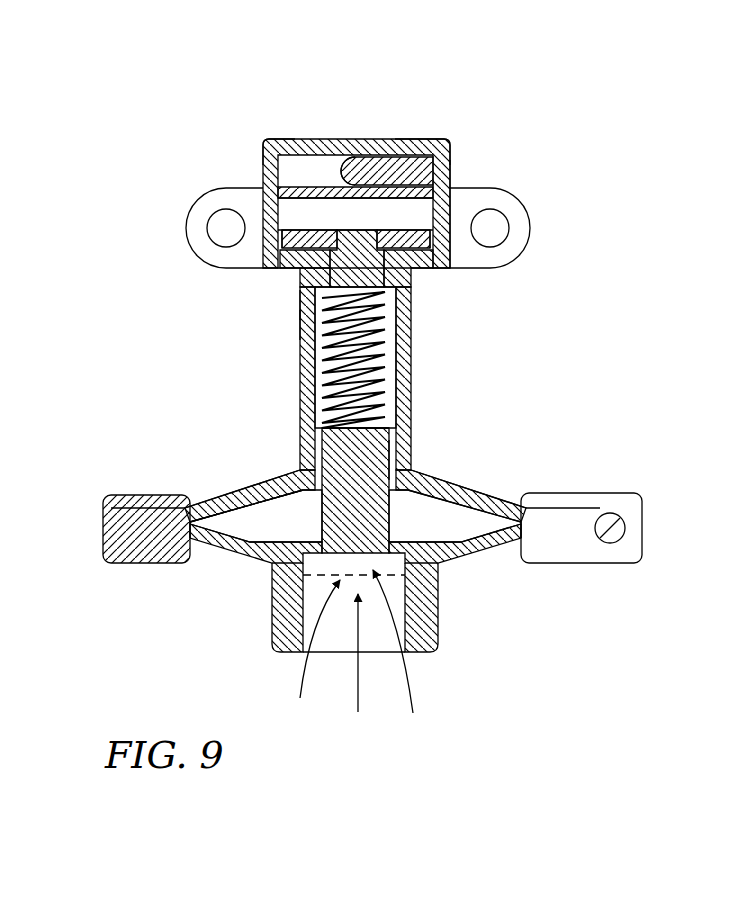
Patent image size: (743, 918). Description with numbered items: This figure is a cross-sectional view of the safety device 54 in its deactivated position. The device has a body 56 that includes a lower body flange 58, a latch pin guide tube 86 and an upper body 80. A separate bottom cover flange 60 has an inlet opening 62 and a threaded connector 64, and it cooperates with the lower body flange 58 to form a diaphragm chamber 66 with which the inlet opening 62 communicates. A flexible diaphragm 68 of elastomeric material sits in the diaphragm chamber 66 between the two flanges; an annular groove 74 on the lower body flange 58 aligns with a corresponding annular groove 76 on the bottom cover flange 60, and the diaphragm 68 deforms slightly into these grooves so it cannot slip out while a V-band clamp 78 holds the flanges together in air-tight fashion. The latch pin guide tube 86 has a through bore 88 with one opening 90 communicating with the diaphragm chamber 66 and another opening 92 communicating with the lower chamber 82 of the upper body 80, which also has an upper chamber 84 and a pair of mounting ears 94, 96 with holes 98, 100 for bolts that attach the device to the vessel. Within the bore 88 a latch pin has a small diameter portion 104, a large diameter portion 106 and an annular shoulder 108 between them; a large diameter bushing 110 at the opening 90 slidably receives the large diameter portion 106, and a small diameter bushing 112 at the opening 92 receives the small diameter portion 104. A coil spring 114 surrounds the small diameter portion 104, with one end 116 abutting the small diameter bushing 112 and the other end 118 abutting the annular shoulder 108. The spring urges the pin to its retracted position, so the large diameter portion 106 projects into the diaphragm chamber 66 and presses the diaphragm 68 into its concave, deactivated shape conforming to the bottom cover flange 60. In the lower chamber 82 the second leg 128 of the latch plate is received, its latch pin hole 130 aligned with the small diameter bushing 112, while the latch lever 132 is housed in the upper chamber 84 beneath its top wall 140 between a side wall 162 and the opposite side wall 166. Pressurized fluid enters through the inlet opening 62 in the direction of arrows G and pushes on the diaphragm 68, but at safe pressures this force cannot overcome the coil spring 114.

The safety device 54 is at (652, 168).
The body 56 is at (185, 376).
The lower body flange 58 is at (456, 498).
The bottom cover flange 60 is at (454, 558).
The inlet opening 62 is at (320, 632).
The threaded connector 64 is at (283, 620).
The diaphragm chamber 66 is at (440, 616).
The flexible diaphragm 68 is at (540, 532).
The annular groove 74 is at (192, 512).
The annular groove 76 is at (206, 540).
The V-band clamp 78 is at (135, 554).
The upper body 80 is at (228, 142).
The lower chamber 82 is at (406, 213).
The upper chamber 84 is at (358, 150).
The latch pin guide tube 86 is at (300, 345).
The through bore 88 is at (393, 397).
The opening 90 is at (332, 514).
The opening 92 is at (400, 262).
The mounting ear 94 is at (205, 198).
The mounting ear 96 is at (513, 205).
The hole 98 is at (216, 224).
The hole 100 is at (497, 232).
The small diameter portion 104 is at (300, 304).
The large diameter portion 106 is at (300, 492).
The annular shoulder 108 is at (326, 474).
The large diameter bushing 110 is at (411, 462).
The small diameter bushing 112 is at (300, 290).
The coil spring 114 is at (411, 366).
The end of coil spring 116 is at (300, 320).
The other end of coil spring 118 is at (416, 432).
The second leg 128 is at (280, 246).
The latch pin hole 130 is at (350, 234).
The latch lever 132 is at (410, 146).
The top wall 140 is at (283, 142).
The side wall 162 is at (338, 162).
The opposite side wall 166 is at (452, 187).
The arrows G is at (356, 653).